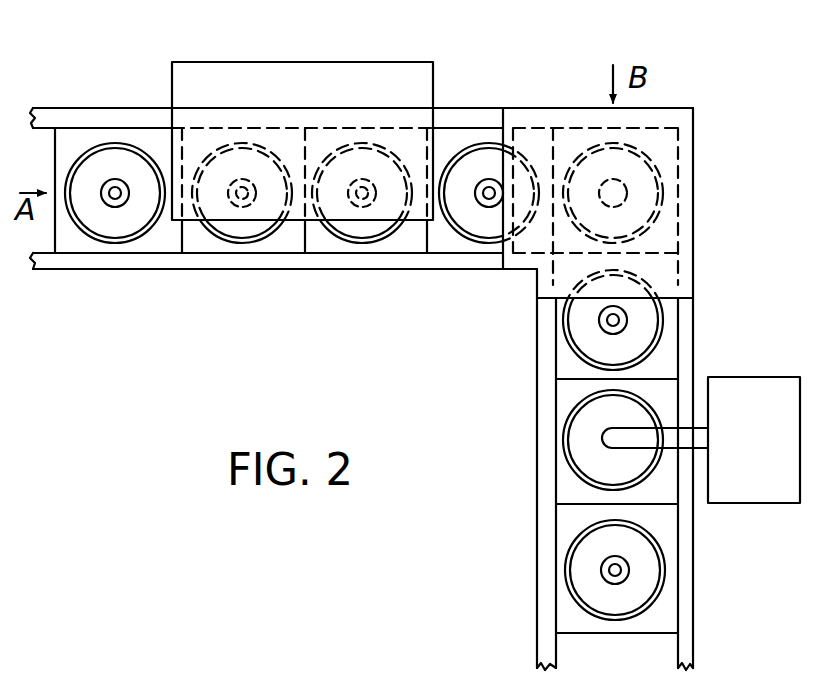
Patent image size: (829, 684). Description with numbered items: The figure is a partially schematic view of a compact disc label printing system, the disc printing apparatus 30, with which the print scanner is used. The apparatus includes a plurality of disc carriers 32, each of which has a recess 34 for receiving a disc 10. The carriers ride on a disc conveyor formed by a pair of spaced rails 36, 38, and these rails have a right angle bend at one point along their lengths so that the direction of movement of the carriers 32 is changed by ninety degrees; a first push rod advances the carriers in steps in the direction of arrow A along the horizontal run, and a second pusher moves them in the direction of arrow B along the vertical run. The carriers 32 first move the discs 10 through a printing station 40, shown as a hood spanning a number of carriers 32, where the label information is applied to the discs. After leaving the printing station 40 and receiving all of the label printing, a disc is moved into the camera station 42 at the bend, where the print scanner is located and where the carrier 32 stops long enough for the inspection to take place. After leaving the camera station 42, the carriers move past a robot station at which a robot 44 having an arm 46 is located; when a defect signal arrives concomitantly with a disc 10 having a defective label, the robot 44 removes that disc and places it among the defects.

The disc 10 is at (80, 190).
The disc printing apparatus 30 is at (448, 333).
The disc carrier 32 is at (73, 245).
The recess 34 is at (128, 165).
The rail 36 is at (132, 118).
The rail 38 is at (130, 262).
The printing station 40 is at (363, 85).
The camera station 42 is at (698, 178).
The robot 44 is at (740, 378).
The arm 46 is at (658, 438).